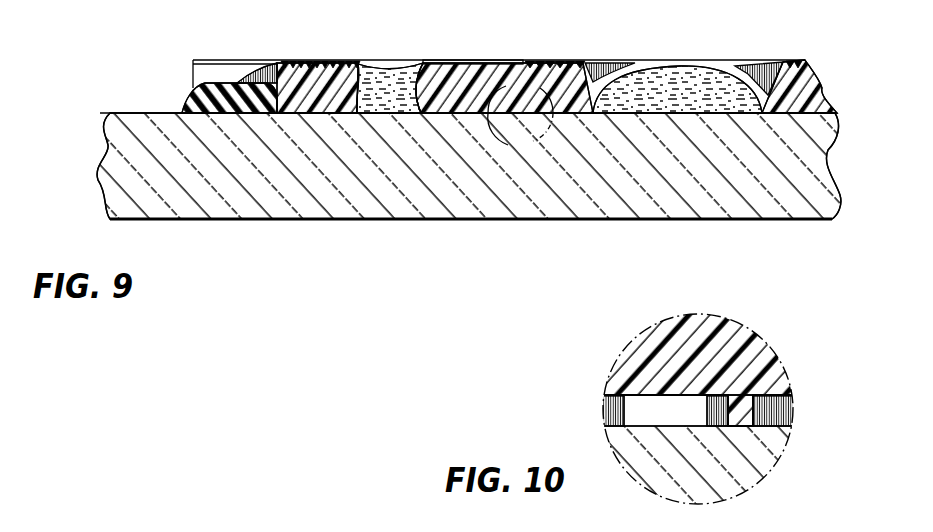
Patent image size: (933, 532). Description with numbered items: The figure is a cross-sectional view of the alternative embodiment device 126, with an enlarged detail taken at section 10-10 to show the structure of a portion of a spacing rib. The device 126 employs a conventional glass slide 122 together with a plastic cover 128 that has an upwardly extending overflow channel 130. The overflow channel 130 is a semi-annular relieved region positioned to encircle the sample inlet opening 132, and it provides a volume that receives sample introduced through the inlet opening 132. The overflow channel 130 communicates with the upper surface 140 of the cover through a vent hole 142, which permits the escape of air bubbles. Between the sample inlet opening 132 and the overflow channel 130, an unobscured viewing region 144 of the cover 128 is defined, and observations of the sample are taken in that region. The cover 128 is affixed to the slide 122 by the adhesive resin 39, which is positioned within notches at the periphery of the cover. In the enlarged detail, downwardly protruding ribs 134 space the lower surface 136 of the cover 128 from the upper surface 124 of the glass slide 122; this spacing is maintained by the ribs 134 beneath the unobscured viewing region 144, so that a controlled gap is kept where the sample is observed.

In FIG. 9, the section 10- 10 is at (520, 116).
In FIG. 9, the adhesive resin 39 is at (193, 60).
In FIG. 9, the glass slide 122 is at (233, 222).
In FIG. 10, the glass slide 122 is at (760, 478).
In FIG. 9, the upper surface of the glass slide 124 is at (128, 110).
In FIG. 10, the upper surface of the glass slide 124 is at (667, 420).
In FIG. 9, the alternative embodiment device 126 is at (436, 59).
In FIG. 10, the alternative embodiment device 126 is at (712, 377).
In FIG. 9, the plastic cover 128 is at (250, 60).
In FIG. 10, the plastic cover 128 is at (752, 332).
In FIG. 9, the overflow channel 130 is at (362, 103).
In FIG. 9, the sample inlet opening 132 is at (588, 62).
In FIG. 10, the downwardly protruding ribs 134 is at (750, 428).
In FIG. 10, the lower surface of the cover 136 is at (772, 400).
In FIG. 9, the upper surface of the cover 140 is at (480, 60).
In FIG. 9, the vent hole 142 is at (360, 63).
In FIG. 9, the unobscured viewing region 144 is at (497, 62).